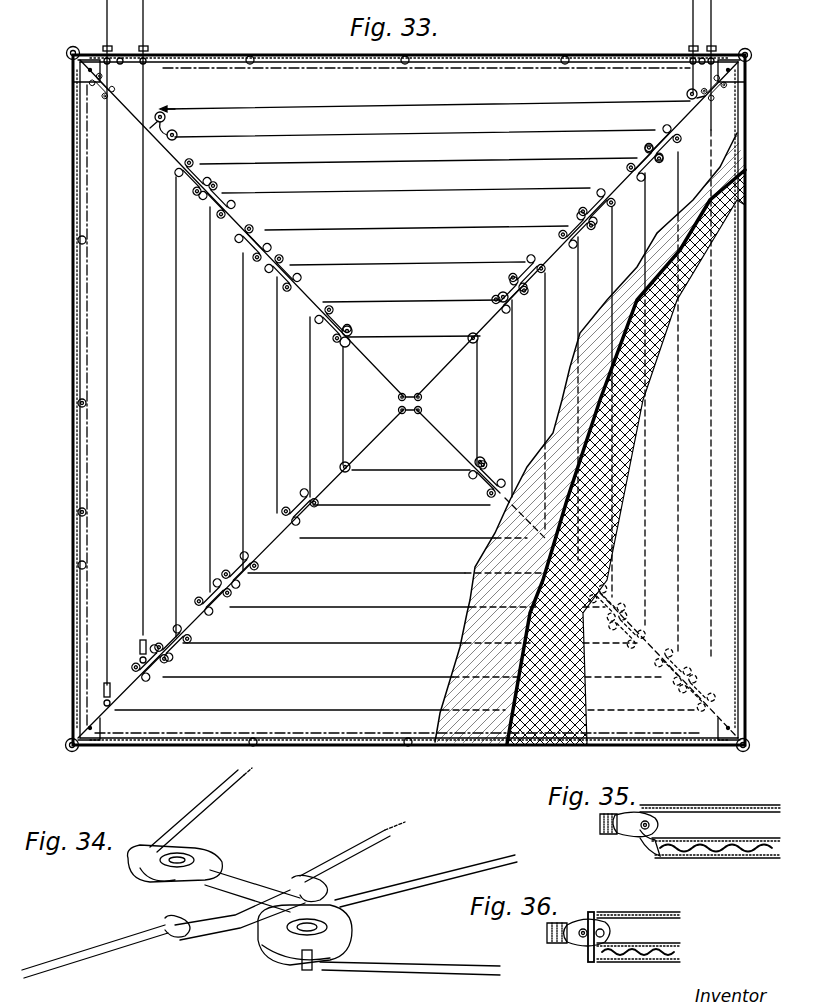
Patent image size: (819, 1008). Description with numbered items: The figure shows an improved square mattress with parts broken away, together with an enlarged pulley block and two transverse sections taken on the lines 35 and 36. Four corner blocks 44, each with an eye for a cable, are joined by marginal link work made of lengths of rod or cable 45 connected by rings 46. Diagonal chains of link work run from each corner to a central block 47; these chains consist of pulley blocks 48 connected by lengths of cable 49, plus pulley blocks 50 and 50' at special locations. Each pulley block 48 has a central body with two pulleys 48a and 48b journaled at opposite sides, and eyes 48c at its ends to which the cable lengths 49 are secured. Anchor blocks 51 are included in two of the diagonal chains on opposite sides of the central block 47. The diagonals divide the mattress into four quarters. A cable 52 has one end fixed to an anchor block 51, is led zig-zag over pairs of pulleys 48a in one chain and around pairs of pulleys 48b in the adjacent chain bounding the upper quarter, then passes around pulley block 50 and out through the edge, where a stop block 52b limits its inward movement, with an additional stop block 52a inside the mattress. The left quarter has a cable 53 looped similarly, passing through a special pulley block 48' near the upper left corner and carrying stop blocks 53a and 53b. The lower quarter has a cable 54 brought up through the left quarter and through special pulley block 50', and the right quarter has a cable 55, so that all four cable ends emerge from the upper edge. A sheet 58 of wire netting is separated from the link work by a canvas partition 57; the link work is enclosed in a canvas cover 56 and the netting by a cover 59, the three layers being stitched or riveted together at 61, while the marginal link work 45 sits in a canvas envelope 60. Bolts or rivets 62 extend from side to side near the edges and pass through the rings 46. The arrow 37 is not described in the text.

In FIG. 33, the section line 35 is at (95, 512).
In FIG. 33, the section line 36 is at (95, 404).
In FIG. 33, the direction arrow 37 is at (210, 609).
In FIG. 33, the corner block 44 is at (76, 75).
In FIG. 33, the rod or cable length 45 is at (78, 310).
In FIG. 35, the rod or cable length 45 is at (635, 812).
In FIG. 33, the ring 46 is at (77, 240).
In FIG. 36, the ring 46 is at (620, 931).
In FIG. 33, the central block 47 is at (422, 403).
In FIG. 33, the pulley block 48 is at (423, 418).
In FIG. 34, the pulley block 48 is at (240, 917).
In FIG. 33, the special pulley block 48' is at (179, 126).
In FIG. 33, the pulley 48a is at (350, 330).
In FIG. 34, the pulley 48a is at (345, 934).
In FIG. 33, the pulley 48b is at (485, 289).
In FIG. 34, the pulley 48b is at (210, 855).
In FIG. 34, the eye 48c is at (303, 876).
In FIG. 33, the cable length 49 is at (247, 235).
In FIG. 34, the cable length 49 is at (415, 850).
In FIG. 33, the pulley block 50 is at (729, 88).
In FIG. 33, the special pulley block 50' is at (130, 86).
In FIG. 33, the anchor block 51 is at (474, 333).
In FIG. 33, the cable 52 is at (690, 19).
In FIG. 34, the cable 52 is at (435, 972).
In FIG. 33, the stop block 52a is at (176, 110).
In FIG. 33, the stop block 52b is at (688, 47).
In FIG. 33, the cable 53 is at (152, 25).
In FIG. 34, the cable 53 is at (213, 800).
In FIG. 33, the stop block 53a is at (139, 648).
In FIG. 33, the stop block 53b is at (150, 47).
In FIG. 33, the cable 54 is at (106, 25).
In FIG. 33, the cable 55 is at (712, 19).
In FIG. 35, the canvas cover 56 is at (724, 803).
In FIG. 35, the partition 57 is at (738, 838).
In FIG. 35, the wire netting sheet 58 is at (745, 858).
In FIG. 35, the canvas cover 59 is at (715, 858).
In FIG. 35, the canvas envelope 60 is at (660, 824).
In FIG. 36, the canvas envelope 60 is at (605, 920).
In FIG. 35, the stitching or riveting 61 is at (610, 834).
In FIG. 36, the stitching or riveting 61 is at (560, 945).
In FIG. 36, the bolt or rivet 62 is at (592, 962).